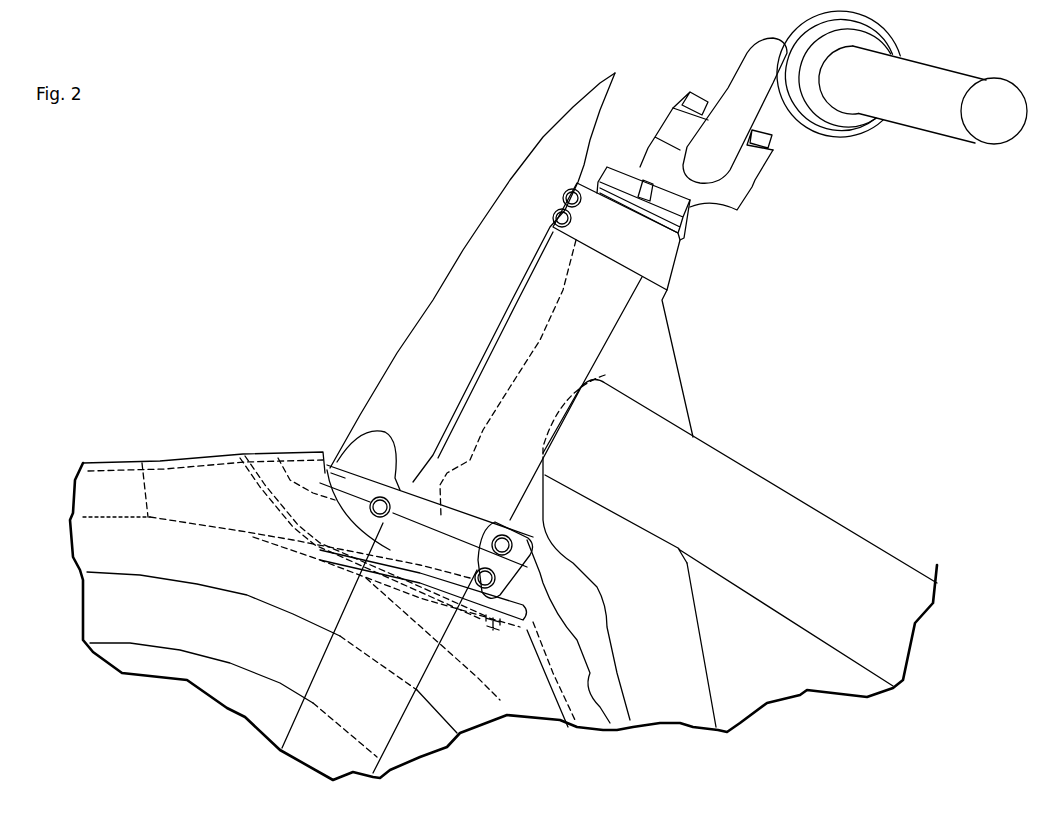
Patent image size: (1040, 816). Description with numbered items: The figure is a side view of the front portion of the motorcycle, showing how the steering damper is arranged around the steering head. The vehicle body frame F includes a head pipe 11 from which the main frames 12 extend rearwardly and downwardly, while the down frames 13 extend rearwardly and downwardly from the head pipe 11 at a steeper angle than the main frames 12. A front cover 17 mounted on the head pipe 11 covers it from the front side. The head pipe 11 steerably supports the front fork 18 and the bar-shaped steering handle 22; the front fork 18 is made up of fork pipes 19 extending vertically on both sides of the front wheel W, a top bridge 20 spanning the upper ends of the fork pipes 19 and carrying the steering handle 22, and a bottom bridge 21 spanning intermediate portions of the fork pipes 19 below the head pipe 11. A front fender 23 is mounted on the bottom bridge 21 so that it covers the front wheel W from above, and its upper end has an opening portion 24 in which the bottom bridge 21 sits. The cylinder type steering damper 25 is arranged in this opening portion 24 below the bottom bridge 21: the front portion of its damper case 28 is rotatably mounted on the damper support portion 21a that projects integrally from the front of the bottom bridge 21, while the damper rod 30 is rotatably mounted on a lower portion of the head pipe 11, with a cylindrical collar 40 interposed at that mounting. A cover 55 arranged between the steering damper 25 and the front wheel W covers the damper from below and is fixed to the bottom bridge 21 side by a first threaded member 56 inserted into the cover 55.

The head pipe 11 is at (668, 380).
The main frames 12 is at (850, 548).
The down frames 13 is at (708, 695).
The front cover 17 is at (468, 256).
The front fork 18 is at (316, 676).
The fork pipes 19 is at (360, 623).
The top bridge 20 is at (665, 262).
The bottom bridge 21 is at (365, 490).
The damper support portion 21a is at (278, 458).
The steering handle 22 is at (732, 88).
The front fender 23 is at (200, 450).
The opening portion 24 is at (333, 457).
The steering damper 25 is at (413, 537).
The damper case 28 is at (323, 563).
The damper rod 30 is at (477, 627).
The cylindrical collar 40 is at (527, 583).
The cover 55 is at (247, 487).
The first threaded member 56 is at (293, 547).
The vehicle body frame F is at (766, 483).
The front wheel W is at (142, 463).